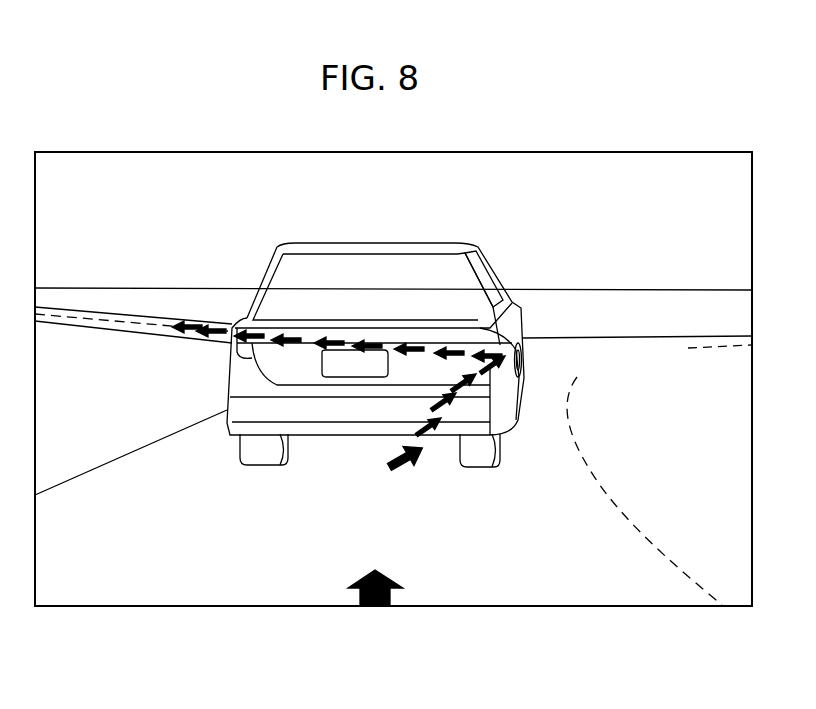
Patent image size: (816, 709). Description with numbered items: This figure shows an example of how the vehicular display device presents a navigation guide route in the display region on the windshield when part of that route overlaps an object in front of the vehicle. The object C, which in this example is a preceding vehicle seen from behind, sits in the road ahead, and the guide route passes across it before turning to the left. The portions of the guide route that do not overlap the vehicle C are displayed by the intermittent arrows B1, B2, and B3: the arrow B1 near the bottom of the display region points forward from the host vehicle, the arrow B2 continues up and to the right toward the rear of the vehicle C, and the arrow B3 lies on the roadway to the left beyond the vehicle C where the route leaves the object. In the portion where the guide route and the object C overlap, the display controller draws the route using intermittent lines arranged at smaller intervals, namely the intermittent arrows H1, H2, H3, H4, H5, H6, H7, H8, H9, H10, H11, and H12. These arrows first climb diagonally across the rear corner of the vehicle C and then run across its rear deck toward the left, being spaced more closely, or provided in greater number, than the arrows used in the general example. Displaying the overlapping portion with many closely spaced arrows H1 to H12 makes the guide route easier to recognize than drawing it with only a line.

The object C is at (381, 244).
The intermittent arrow H1 is at (447, 437).
The intermittent arrow H2 is at (458, 420).
The intermittent arrow H3 is at (472, 400).
The intermittent arrow H4 is at (502, 371).
The intermittent arrow H5 is at (497, 358).
The intermittent arrow H6 is at (448, 350).
The intermittent arrow H7 is at (409, 347).
The intermittent arrow H8 is at (368, 344).
The intermittent arrow H9 is at (331, 340).
The intermittent arrow H10 is at (286, 336).
The intermittent arrow H11 is at (236, 334).
The intermittent arrow H12 is at (216, 326).
The intermittent arrow B1 is at (394, 596).
The intermittent arrow B2 is at (417, 463).
The intermittent arrow B3 is at (190, 335).